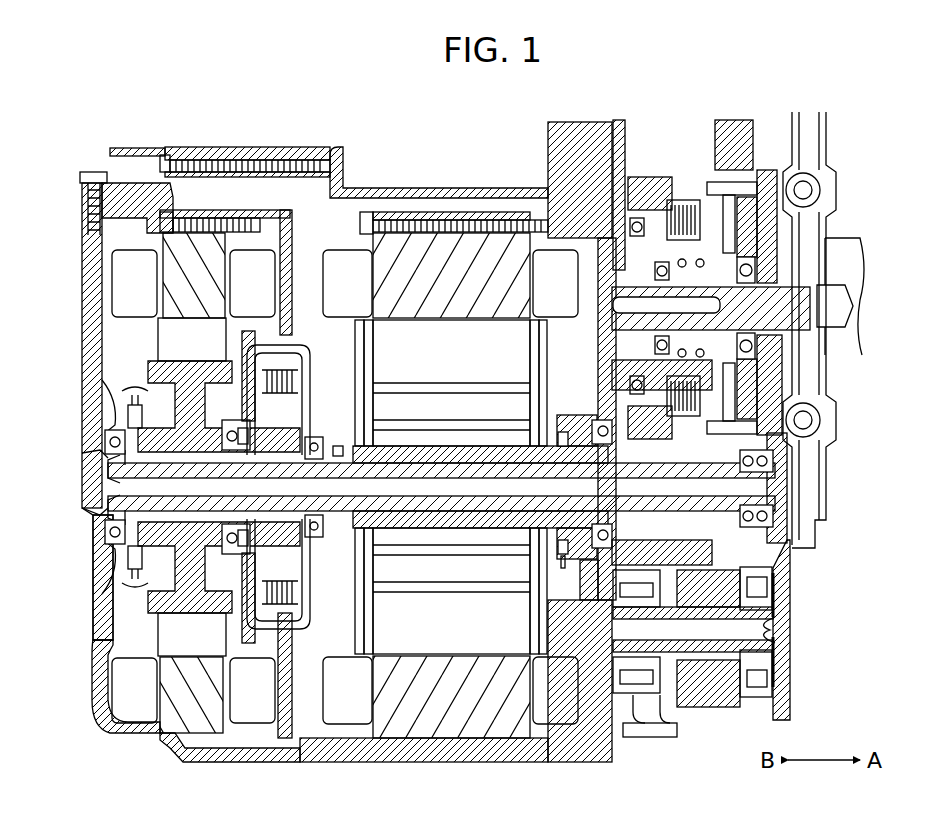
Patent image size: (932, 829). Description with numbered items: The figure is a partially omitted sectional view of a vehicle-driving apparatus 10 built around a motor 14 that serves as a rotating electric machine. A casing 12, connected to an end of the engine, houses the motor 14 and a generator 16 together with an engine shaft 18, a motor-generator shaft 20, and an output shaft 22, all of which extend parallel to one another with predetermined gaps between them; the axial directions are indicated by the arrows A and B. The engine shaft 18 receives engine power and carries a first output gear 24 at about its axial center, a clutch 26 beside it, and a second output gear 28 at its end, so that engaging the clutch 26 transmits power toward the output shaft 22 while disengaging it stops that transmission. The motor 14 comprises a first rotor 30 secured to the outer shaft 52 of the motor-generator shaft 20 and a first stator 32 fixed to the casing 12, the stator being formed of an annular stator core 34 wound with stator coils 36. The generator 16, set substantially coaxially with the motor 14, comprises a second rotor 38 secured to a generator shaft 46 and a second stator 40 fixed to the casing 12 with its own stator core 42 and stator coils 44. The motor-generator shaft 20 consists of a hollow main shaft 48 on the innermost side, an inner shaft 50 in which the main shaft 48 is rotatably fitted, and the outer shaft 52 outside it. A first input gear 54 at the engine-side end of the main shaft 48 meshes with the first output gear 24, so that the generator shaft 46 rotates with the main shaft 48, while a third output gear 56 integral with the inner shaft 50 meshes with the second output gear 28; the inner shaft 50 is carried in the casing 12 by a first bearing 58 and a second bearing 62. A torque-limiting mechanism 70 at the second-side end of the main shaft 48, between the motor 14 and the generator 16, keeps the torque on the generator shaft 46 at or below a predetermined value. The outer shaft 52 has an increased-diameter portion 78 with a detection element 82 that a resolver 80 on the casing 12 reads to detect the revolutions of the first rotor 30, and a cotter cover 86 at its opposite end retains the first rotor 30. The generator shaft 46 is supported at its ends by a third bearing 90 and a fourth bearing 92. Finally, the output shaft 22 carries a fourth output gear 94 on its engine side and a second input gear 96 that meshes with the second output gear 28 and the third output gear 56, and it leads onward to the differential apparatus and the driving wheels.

The vehicle-driving apparatus 10 is at (568, 87).
The casing 12 is at (543, 159).
The motor 14 is at (401, 205).
The generator 16 is at (116, 342).
The engine shaft 18 is at (822, 303).
The motor-generator shaft 20 is at (427, 534).
The output shaft 22 is at (762, 614).
The first output gear 24 is at (735, 185).
The clutch 26 is at (689, 198).
The second output gear 28 is at (650, 178).
The first rotor 30 is at (422, 330).
The first stator 32 is at (528, 320).
The stator core 34 is at (478, 248).
The stator coils 36 is at (342, 252).
The second rotor 38 is at (176, 341).
The second stator 40 is at (201, 211).
The stator core 42 is at (285, 285).
The stator coils 44 is at (125, 283).
The generator shaft 46 is at (130, 480).
The main shaft 48 is at (663, 470).
The inner shaft 50 is at (400, 446).
The outer shaft 52 is at (464, 445).
The first input gear 54 is at (760, 560).
The third output gear 56 is at (638, 590).
The first bearing 58 is at (600, 585).
The second bearing 62 is at (322, 545).
The torque-limiting mechanism 70 is at (338, 365).
The increased-diameter portion 78 is at (556, 547).
The resolver 80 is at (542, 620).
The detection element 82 is at (560, 572).
The cotter cover 86 is at (337, 447).
The third bearing 90 is at (235, 545).
The fourth bearing 92 is at (115, 535).
The fourth output gear 94 is at (700, 584).
The second input gear 96 is at (650, 735).